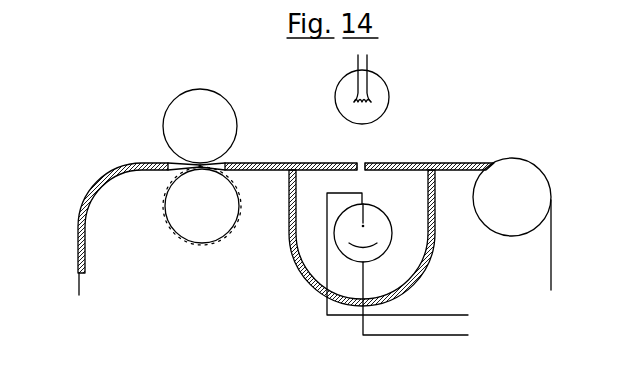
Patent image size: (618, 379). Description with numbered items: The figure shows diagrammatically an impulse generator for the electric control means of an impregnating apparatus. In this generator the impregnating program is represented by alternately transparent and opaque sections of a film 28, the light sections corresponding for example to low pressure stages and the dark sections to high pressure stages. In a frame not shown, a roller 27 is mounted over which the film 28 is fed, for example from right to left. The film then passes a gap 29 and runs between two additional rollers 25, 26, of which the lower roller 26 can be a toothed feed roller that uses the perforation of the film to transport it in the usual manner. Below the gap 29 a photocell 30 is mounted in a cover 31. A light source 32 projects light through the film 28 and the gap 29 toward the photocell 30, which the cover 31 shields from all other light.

The roller 25 is at (168, 103).
The toothed feed roller 26 is at (180, 242).
The roller 27 is at (513, 237).
The film 28 is at (78, 213).
The gap 29 is at (362, 172).
The photocell 30 is at (393, 240).
The cover 31 is at (300, 272).
The light source 32 is at (388, 87).